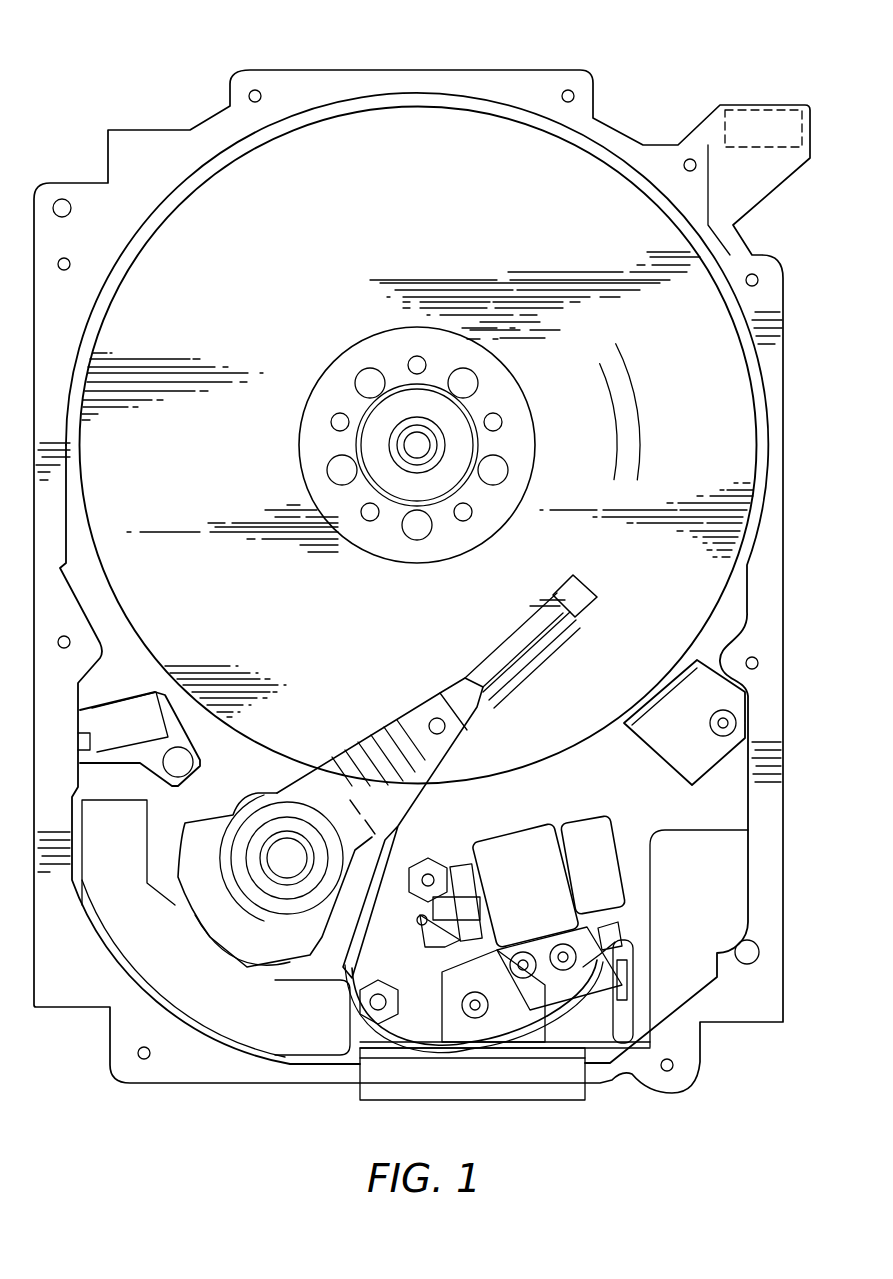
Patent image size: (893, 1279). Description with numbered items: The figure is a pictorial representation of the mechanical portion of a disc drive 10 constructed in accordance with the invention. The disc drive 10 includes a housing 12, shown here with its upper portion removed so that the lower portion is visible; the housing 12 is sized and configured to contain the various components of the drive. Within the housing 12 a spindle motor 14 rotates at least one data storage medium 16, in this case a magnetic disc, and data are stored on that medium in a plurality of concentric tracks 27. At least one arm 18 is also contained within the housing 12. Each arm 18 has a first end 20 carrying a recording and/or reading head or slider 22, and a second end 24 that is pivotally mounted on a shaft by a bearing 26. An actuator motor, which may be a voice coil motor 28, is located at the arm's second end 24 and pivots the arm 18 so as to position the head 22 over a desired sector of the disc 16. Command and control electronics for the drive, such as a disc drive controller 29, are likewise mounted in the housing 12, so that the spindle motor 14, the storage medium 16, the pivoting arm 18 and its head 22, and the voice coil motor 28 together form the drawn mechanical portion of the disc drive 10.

The disc drive 10 is at (88, 116).
The housing 12 is at (548, 80).
The spindle motor 14 is at (412, 450).
The data storage medium 16 is at (331, 244).
The arm 18 is at (405, 740).
The first end 20 is at (520, 626).
The head 22 is at (590, 582).
The second end 24 is at (313, 800).
The bearing 26 is at (277, 850).
The concentric tracks 27 is at (628, 418).
The voice coil motor 28 is at (178, 979).
The disc drive controller 29 is at (712, 896).